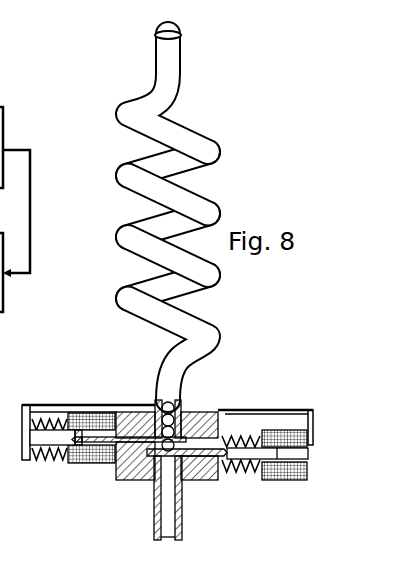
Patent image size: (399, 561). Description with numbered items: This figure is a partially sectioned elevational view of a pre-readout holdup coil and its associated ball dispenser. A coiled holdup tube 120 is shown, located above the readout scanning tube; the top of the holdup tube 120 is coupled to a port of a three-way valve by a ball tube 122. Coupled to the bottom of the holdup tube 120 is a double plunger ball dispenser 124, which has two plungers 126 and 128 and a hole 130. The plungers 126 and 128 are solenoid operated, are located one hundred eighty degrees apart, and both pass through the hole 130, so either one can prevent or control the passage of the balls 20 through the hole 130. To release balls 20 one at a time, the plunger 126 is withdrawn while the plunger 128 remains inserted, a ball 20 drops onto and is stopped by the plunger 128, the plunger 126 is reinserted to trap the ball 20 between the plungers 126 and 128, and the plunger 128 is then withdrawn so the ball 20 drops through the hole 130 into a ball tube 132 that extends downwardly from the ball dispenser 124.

The ball 20 is at (181, 408).
The coiled holdup tube 120 is at (203, 135).
The ball tube 122 is at (177, 47).
The double plunger ball dispenser 124 is at (190, 482).
The plunger 126 is at (133, 415).
The plunger 128 is at (203, 445).
The hole 130 is at (158, 462).
The ball tube 132 is at (154, 522).